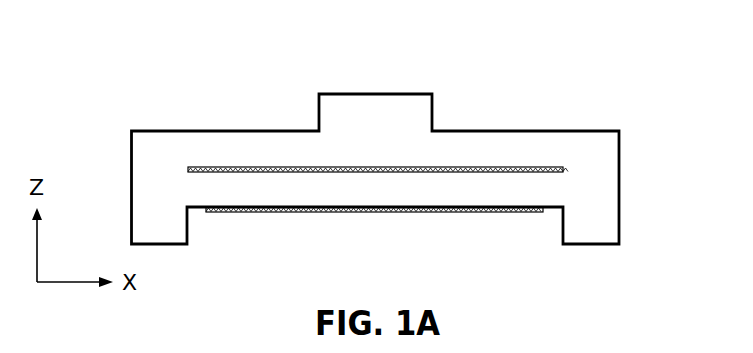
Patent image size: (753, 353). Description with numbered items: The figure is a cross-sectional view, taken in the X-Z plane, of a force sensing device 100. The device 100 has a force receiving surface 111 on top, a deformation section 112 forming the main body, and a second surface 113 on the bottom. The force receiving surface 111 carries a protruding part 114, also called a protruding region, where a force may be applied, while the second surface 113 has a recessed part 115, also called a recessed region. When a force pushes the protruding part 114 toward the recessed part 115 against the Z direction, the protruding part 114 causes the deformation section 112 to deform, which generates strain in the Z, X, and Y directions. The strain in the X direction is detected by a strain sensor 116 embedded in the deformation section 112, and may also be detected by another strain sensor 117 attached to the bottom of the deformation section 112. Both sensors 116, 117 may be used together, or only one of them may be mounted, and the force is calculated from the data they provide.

The force sensing device 100 is at (79, 38).
The force receiving surface 111 is at (376, 144).
The deformation section 112 is at (412, 164).
The second surface 113 is at (550, 209).
The protruding part 114 is at (338, 112).
The recessed part 115 is at (562, 230).
The strain sensor 116 is at (188, 169).
The strain sensor 117 is at (206, 208).